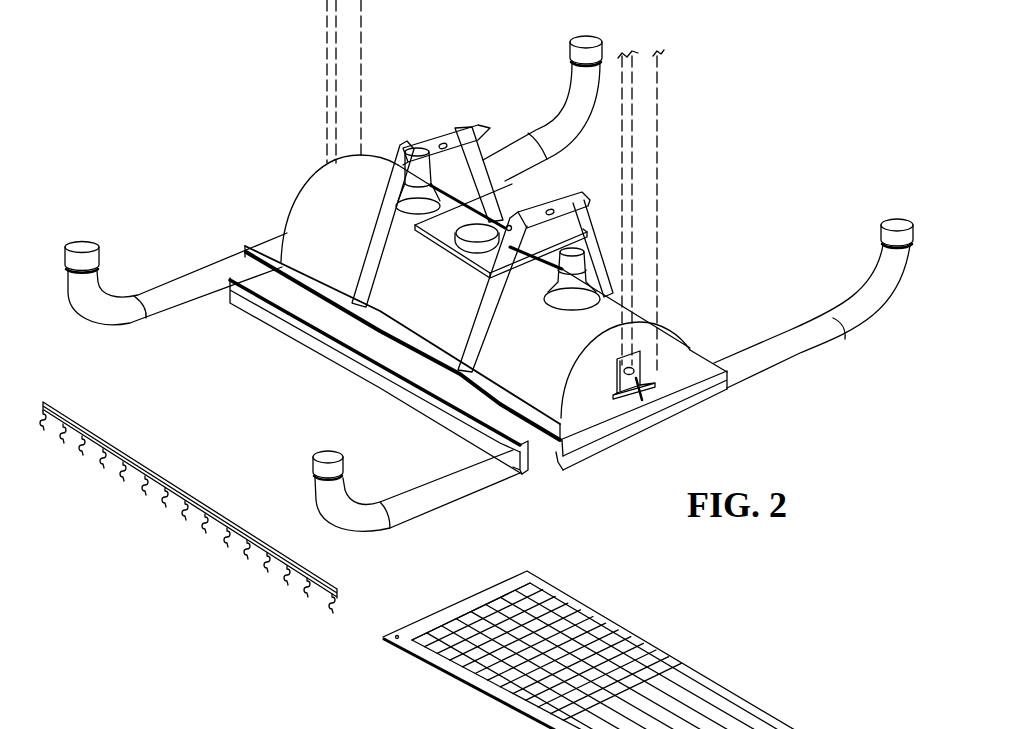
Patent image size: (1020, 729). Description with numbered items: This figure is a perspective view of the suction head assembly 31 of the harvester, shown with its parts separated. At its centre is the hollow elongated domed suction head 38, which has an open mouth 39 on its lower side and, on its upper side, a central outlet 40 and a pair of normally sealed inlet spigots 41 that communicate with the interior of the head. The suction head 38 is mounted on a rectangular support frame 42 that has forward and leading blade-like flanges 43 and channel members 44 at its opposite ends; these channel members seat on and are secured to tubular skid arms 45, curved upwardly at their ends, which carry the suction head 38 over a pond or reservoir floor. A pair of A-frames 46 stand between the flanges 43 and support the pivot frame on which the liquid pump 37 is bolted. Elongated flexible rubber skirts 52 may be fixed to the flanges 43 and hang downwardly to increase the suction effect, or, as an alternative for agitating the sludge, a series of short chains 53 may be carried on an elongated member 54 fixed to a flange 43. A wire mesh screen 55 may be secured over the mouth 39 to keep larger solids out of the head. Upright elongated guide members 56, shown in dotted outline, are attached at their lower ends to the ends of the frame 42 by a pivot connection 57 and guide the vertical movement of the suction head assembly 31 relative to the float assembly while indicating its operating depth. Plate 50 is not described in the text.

The suction head assembly 31 is at (386, 150).
The liquid pump 37 is at (198, 721).
The domed suction head 38 is at (312, 182).
The open mouth 39 is at (392, 350).
The central outlet 40 is at (545, 110).
The inlet spigots 41 is at (421, 159).
The support frame 42 is at (604, 457).
The blade-like flanges 43 is at (342, 309).
The channel members 44 is at (249, 239).
The skid arms 45 is at (774, 364).
The A-frames 46 is at (488, 128).
The mounting plate 50 is at (488, 197).
The flexible skirts 52 is at (418, 410).
The chains 53 is at (250, 548).
The elongated member 54 is at (320, 574).
The screen 55 is at (660, 647).
The guide member 56 is at (327, 39).
The pivot connection 57 is at (641, 392).